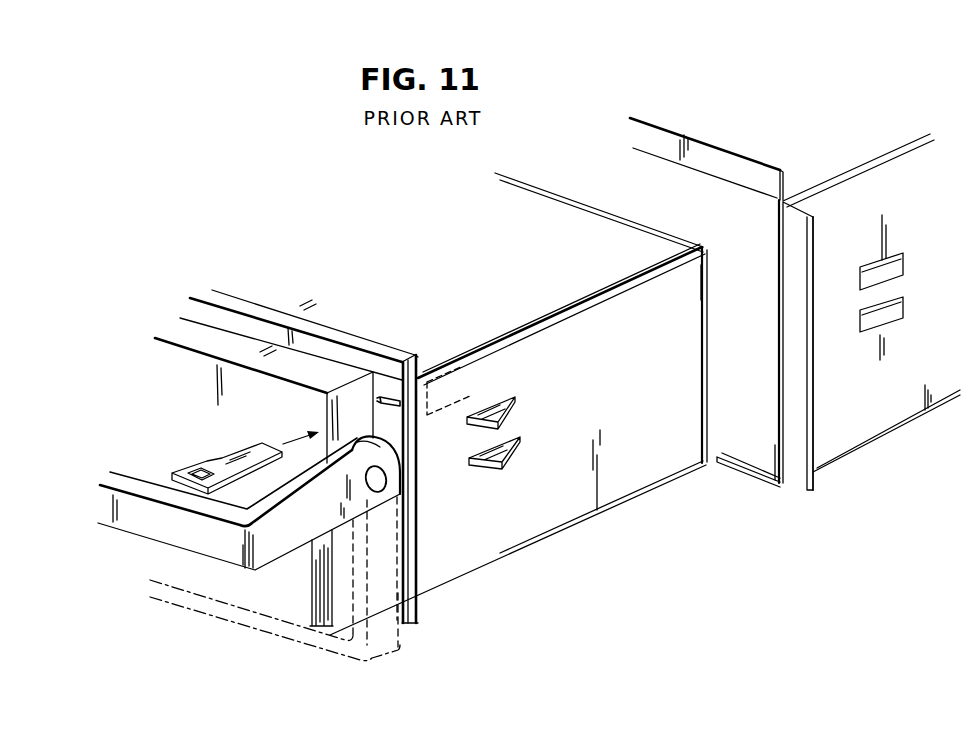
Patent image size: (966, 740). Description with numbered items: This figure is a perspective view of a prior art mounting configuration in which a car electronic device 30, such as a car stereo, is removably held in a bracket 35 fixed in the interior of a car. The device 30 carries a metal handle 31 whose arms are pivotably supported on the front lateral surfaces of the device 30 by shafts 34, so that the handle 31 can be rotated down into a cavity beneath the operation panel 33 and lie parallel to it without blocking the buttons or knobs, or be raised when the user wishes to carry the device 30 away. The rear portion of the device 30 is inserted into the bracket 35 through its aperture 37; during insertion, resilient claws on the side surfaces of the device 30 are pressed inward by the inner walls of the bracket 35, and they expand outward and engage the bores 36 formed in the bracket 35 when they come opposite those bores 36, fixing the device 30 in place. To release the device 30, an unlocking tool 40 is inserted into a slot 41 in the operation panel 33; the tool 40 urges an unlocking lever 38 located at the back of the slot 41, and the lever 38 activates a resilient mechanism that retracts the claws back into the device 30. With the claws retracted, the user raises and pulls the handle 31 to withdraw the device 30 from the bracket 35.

The device 30 is at (652, 473).
The handle 31 is at (153, 530).
The operation panel 33 is at (277, 597).
The shaft 34 is at (378, 483).
The bracket 35 is at (860, 428).
The bore 36 is at (897, 309).
The aperture 37 is at (518, 440).
The unlocking lever 38 is at (447, 377).
The unlocking tool 40 is at (204, 458).
The slot 41 is at (380, 400).